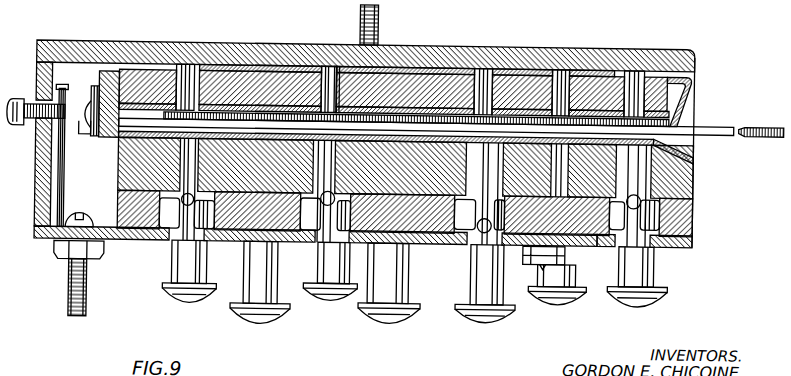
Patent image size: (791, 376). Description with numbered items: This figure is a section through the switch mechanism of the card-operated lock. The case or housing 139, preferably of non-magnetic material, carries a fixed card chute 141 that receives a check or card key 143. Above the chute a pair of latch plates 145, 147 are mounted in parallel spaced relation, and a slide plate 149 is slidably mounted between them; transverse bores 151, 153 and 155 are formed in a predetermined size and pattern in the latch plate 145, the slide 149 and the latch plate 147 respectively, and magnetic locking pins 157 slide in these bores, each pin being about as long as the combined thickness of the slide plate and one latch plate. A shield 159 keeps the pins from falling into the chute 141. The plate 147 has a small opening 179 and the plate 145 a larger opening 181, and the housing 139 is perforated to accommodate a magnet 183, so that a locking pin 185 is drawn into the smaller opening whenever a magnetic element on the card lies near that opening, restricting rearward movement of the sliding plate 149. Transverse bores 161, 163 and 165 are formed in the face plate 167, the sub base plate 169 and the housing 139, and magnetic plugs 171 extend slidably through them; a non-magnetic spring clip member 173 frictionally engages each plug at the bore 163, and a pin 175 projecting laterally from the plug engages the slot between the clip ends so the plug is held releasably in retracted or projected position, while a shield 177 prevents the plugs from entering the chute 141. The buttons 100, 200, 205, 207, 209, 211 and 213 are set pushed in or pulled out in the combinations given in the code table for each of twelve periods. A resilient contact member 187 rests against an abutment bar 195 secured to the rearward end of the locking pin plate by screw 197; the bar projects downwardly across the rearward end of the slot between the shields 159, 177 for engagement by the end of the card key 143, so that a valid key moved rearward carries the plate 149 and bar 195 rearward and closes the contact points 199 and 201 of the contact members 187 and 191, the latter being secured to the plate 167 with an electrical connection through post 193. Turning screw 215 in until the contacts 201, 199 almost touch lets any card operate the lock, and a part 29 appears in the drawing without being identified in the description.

The housing top plate 29 is at (48, 40).
The screw 197 is at (100, 88).
The resilient contact member 187 is at (96, 92).
The screw 215 is at (37, 100).
The contact point 201 is at (38, 142).
The contact point 199 is at (66, 142).
The abutment bar 195 is at (106, 150).
The resilient contact member 191 is at (68, 201).
The post 193 is at (72, 270).
The face plate 167 is at (145, 240).
The latch plate 145 is at (224, 62).
The transverse bores 151 is at (322, 63).
The transverse bores 153 is at (337, 62).
The magnetic locking pins 157 is at (357, 62).
The transverse bores 155 is at (297, 108).
The shield 177 is at (165, 114).
The slide plate 149 is at (440, 62).
The latch plate 147 is at (405, 90).
The larger opening 181 is at (556, 62).
The locking pin 185 is at (572, 62).
The small opening 179 is at (522, 92).
The shield 159 is at (594, 108).
The card chute 141 is at (680, 110).
The card key 143 is at (741, 124).
The housing 139 is at (698, 196).
The sub base plate 169 is at (697, 232).
The transverse bores 165 is at (468, 153).
The magnet 183 is at (560, 152).
The transverse bores 163 is at (592, 171).
The spring clip member 173 is at (645, 222).
The pin 175 is at (636, 212).
The transverse bores 161 is at (657, 268).
The button 213 is at (660, 290).
The button 100 is at (560, 296).
The button 211 is at (492, 314).
The button 200 is at (410, 313).
The magnetic plugs 171 is at (400, 316).
The button 209 is at (345, 294).
The button 207 is at (250, 303).
The button 205 is at (166, 284).